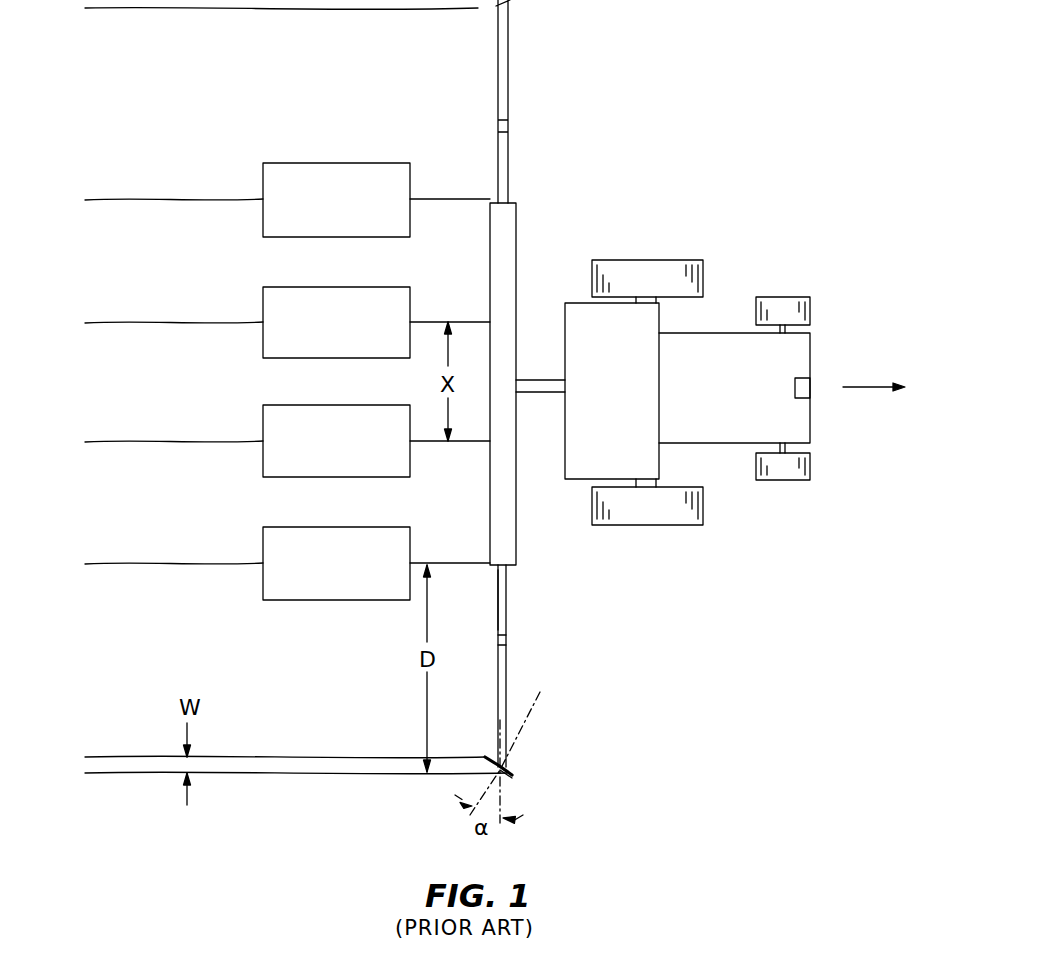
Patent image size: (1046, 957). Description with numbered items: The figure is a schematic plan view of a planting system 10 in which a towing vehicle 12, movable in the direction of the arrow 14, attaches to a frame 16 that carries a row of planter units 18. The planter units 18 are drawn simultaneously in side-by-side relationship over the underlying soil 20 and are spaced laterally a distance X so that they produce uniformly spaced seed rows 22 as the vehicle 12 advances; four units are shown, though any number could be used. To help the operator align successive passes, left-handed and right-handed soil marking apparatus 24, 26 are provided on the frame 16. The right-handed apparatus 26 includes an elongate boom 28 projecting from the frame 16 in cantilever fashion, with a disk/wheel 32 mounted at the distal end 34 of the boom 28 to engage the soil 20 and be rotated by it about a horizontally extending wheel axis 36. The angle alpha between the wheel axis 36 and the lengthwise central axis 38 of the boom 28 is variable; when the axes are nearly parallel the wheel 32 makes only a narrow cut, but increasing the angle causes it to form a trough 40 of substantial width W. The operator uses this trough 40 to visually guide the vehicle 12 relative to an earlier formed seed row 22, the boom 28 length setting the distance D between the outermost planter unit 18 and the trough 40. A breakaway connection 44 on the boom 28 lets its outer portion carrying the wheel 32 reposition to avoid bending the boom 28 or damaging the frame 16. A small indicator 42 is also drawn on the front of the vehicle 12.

The planting system 10 is at (599, 341).
The towing vehicle 12 is at (729, 248).
The arrow 14 is at (867, 388).
The frame 16 is at (507, 240).
The planter units 18 is at (336, 382).
The soil 20 is at (764, 683).
The seed rows 22 is at (143, 198).
The soil marking apparatus 24 is at (505, 88).
The soil marking apparatus 26 is at (527, 657).
The boom 28 is at (500, 593).
The disk/wheel 32 is at (510, 776).
The distal end 34 is at (505, 760).
The wheel axis 36 is at (528, 716).
The central axis 38 is at (503, 695).
The trough 40 is at (293, 764).
The tractor center indicator 42 is at (808, 380).
The breakaway connection 44 is at (521, 627).